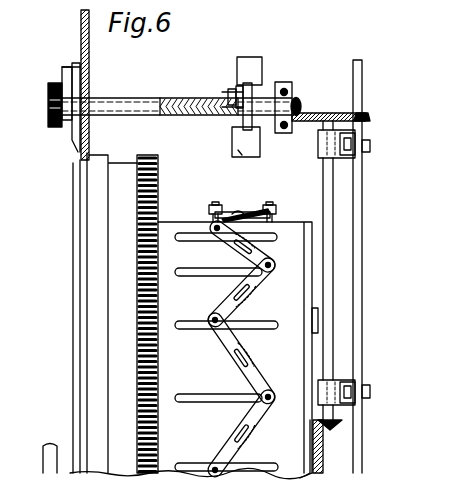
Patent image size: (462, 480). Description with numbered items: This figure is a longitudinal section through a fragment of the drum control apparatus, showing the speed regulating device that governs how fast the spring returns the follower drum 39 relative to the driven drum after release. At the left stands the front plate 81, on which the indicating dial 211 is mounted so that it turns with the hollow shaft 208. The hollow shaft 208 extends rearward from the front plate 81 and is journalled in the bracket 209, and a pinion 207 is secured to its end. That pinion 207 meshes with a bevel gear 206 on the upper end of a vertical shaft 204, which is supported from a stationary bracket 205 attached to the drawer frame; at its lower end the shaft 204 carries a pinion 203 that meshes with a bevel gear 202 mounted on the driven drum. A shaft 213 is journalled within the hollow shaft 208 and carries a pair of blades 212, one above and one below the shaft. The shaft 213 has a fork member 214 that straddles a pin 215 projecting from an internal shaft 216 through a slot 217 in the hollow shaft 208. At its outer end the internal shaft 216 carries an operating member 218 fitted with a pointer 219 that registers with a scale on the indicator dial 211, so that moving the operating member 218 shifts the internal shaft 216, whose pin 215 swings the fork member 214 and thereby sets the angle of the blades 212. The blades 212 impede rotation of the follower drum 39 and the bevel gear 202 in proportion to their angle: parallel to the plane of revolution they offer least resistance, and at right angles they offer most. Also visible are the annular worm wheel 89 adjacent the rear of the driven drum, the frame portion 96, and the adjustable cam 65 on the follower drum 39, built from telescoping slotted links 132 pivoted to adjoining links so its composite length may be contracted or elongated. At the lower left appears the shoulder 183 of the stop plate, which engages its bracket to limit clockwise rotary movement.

The front plate 81 is at (80, 20).
The indicating dial 211 is at (76, 63).
The pointer 219 is at (64, 72).
The operating member 218 is at (50, 104).
The internal shaft 216 is at (180, 117).
The shaft 213 is at (242, 124).
The blades 212 is at (247, 57).
The fork member 214 is at (237, 80).
The pin 215 is at (232, 90).
The slot 217 is at (228, 98).
The pinion 207 is at (296, 103).
The bevel gear 206 is at (331, 107).
The hollow shaft 208 is at (265, 118).
The bracket 209 is at (292, 135).
The stationary bracket 205 is at (362, 262).
The shaft 204 is at (333, 343).
The pinion 203 is at (336, 424).
The bevel gear 202 is at (323, 465).
The annular worm wheel 89 is at (158, 200).
The frame side 96 is at (73, 213).
The adjustable cam 65 is at (250, 212).
The follower drum 39 is at (293, 233).
The slotted link 132 is at (258, 374).
The shoulder 183 is at (36, 462).